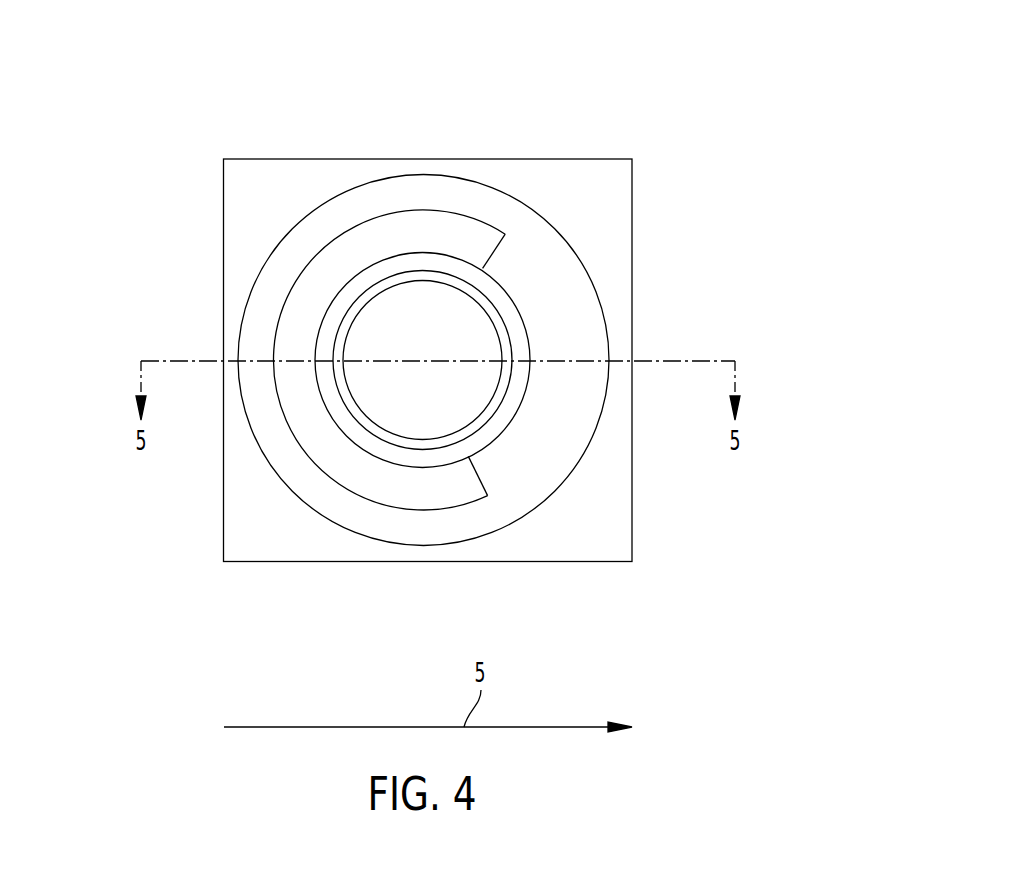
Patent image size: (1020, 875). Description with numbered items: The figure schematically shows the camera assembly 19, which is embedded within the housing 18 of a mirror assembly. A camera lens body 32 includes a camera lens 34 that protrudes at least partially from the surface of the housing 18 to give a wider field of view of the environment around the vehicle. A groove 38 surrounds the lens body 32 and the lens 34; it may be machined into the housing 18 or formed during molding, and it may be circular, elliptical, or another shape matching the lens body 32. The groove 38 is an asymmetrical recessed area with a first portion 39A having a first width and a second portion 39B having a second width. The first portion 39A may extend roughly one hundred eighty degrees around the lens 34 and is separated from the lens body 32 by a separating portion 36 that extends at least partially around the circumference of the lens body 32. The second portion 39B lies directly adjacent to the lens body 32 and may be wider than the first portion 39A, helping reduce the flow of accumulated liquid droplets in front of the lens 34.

The camera assembly 19 is at (573, 92).
The housing 18 is at (245, 182).
The camera lens body 32 is at (480, 288).
The camera lens 34 is at (480, 343).
The separating portion 36 is at (365, 487).
The groove 38 is at (518, 473).
The first portion 39A is at (396, 519).
The second portion 39B is at (522, 447).